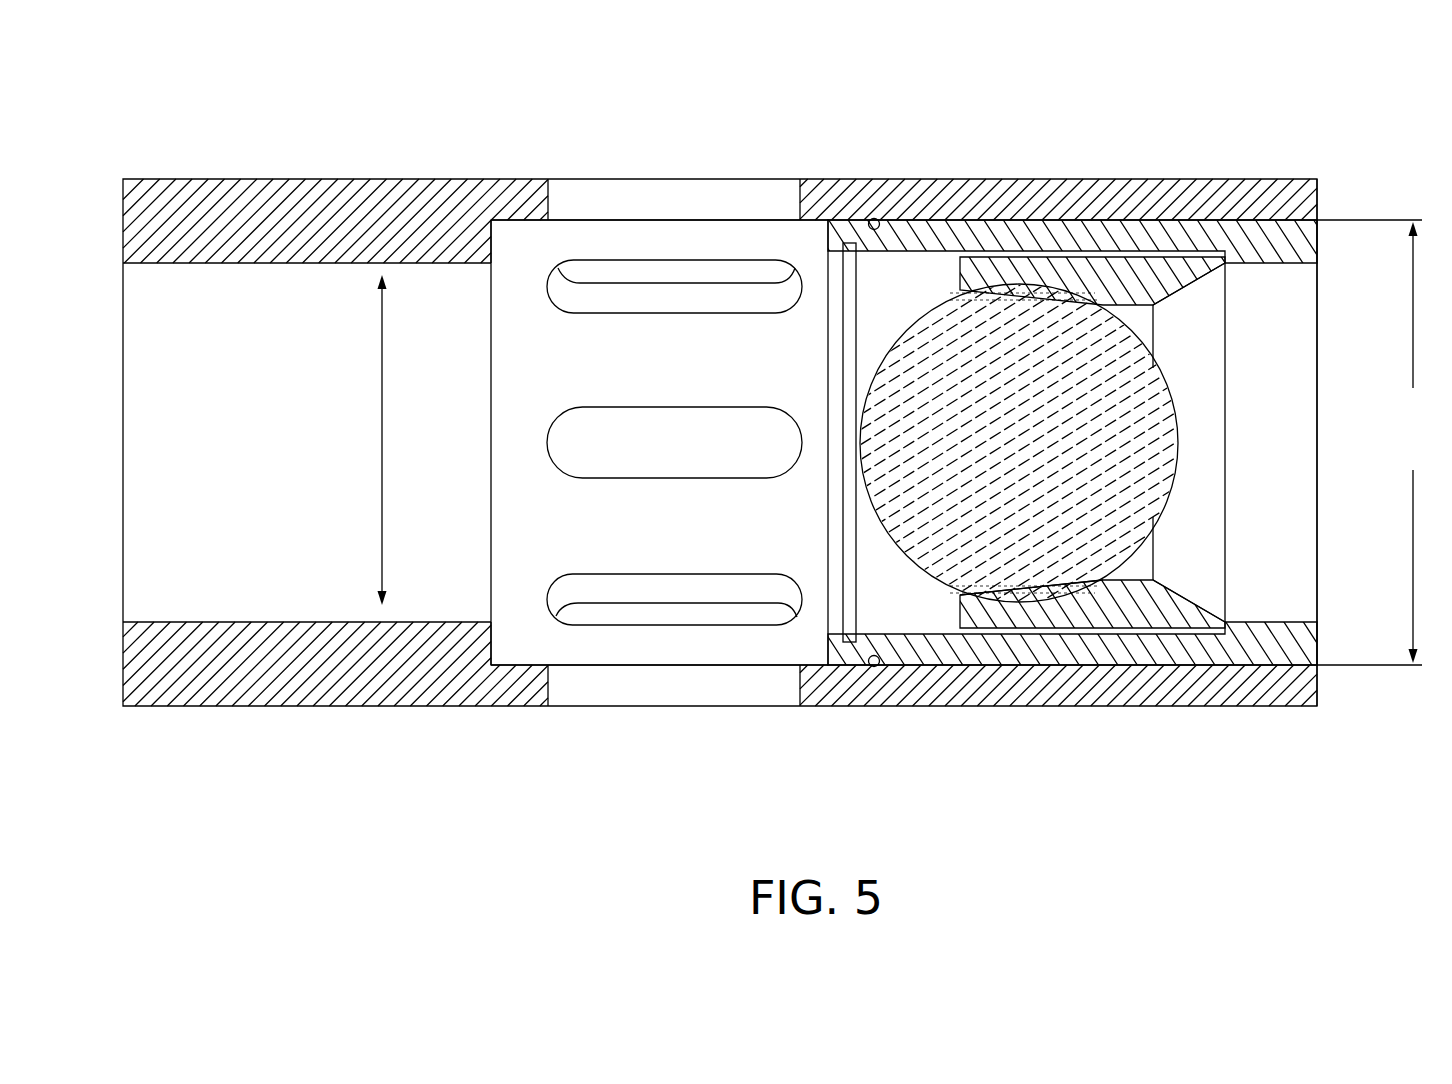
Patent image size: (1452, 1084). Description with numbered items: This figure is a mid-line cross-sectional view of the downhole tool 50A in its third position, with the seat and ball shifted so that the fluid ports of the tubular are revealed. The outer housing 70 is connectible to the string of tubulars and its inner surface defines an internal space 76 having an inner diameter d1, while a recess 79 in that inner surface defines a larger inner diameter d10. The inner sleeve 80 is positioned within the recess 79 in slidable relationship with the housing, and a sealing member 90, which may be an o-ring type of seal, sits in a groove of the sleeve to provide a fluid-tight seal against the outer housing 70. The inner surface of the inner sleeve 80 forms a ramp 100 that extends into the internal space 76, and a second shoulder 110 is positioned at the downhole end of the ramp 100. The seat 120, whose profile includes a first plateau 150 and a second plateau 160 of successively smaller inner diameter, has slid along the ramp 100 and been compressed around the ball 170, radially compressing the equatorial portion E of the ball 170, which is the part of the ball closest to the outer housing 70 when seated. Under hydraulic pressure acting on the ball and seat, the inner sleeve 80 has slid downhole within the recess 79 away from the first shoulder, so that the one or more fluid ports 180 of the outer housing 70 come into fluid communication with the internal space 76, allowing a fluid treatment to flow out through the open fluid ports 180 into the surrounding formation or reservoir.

The downhole tool 50A is at (1268, 158).
The outer housing 70 is at (1298, 193).
The internal space 76 is at (232, 441).
The recess 79 is at (538, 263).
The inner sleeve 80 is at (1300, 246).
The sealing member 90 is at (867, 222).
The ramp 100 is at (1075, 258).
The second shoulder 110 is at (1215, 258).
The seat 120 is at (993, 617).
The first plateau 150 is at (1017, 597).
The second plateau 160 is at (1140, 583).
The ball 170 is at (1177, 424).
The fluid ports 180 is at (598, 263).
The equatorial portion E is at (987, 297).
The inner diameter of the outer housing d1 is at (362, 440).
The inner diameter of the recess d10 is at (1382, 442).